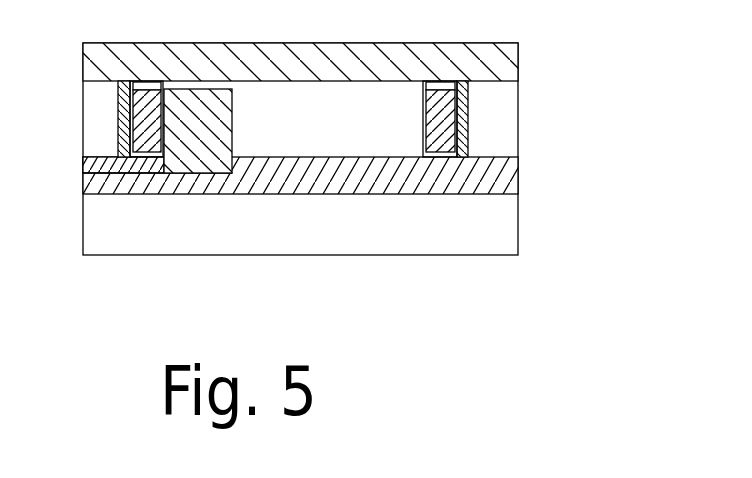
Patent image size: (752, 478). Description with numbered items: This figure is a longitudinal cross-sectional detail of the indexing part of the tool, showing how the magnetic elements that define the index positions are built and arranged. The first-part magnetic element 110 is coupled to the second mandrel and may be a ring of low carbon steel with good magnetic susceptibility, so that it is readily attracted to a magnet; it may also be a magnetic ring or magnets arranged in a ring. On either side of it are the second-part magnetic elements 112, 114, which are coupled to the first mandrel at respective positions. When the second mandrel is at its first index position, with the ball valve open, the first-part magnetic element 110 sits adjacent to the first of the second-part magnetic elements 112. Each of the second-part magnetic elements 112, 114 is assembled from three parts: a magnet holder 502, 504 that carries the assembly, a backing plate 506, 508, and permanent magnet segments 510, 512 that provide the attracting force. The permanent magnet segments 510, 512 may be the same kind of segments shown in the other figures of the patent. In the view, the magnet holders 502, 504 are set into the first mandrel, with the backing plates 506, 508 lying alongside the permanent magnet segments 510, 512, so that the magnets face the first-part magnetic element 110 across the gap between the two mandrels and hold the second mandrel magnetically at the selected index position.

The first-part magnetic element 110 is at (232, 122).
The second-part magnetic element 112 is at (125, 116).
The second-part magnetic element 114 is at (464, 116).
The magnet holder 502 is at (125, 116).
The magnet holder 504 is at (464, 116).
The backing plate 506 is at (125, 112).
The backing plate 508 is at (462, 126).
The permanent magnet segments 510 is at (140, 130).
The permanent magnet segments 512 is at (450, 142).